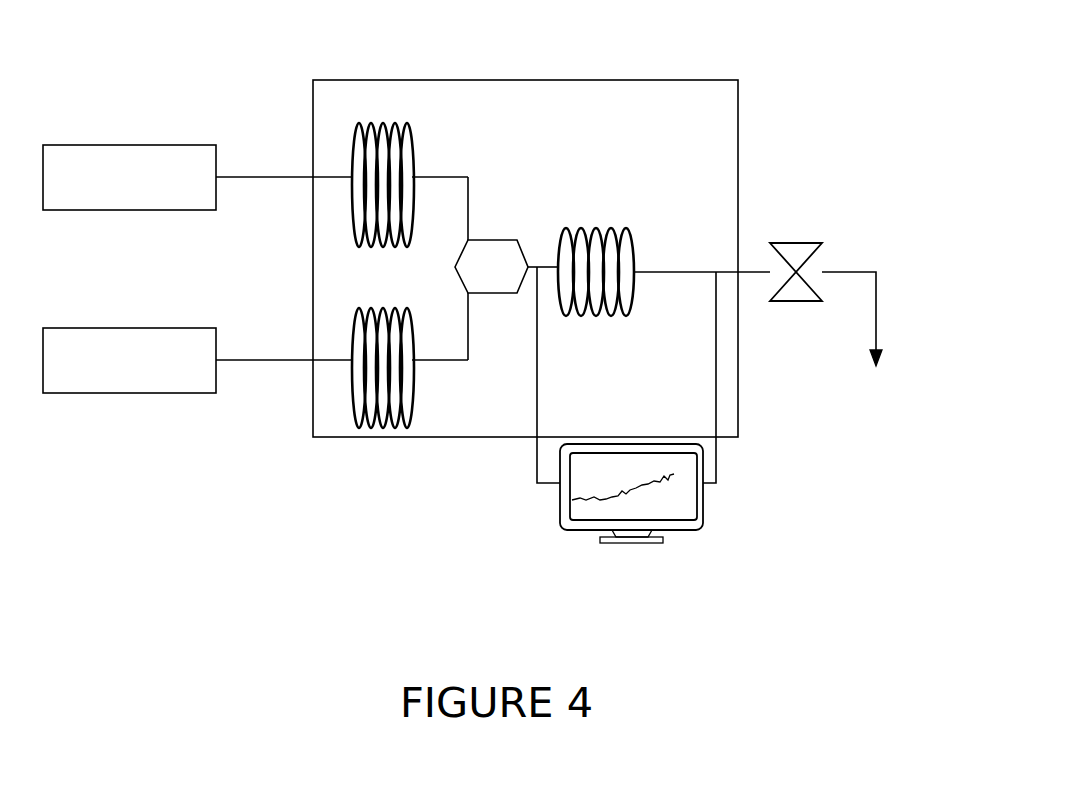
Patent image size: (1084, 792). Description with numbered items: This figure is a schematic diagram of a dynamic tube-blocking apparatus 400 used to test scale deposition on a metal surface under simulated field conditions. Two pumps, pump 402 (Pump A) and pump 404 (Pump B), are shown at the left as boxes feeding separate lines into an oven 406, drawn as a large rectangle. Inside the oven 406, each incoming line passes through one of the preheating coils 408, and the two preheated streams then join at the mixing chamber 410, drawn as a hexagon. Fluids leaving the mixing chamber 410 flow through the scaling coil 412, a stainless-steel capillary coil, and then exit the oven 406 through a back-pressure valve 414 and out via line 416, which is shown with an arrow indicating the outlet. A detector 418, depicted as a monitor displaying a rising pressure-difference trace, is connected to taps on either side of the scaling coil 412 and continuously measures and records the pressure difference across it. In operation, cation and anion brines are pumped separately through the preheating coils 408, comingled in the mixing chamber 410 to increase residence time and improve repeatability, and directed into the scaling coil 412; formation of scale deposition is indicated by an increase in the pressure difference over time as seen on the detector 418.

The apparatus 400 is at (491, 656).
The pump 402 is at (197, 177).
The pump 404 is at (197, 360).
The oven 406 is at (460, 103).
The preheating coils 408 is at (360, 305).
The mixing chamber 410 is at (493, 240).
The scaling coil 412 is at (632, 232).
The back-pressure valve 414 is at (810, 243).
The line 416 is at (878, 323).
The detector 418 is at (680, 533).